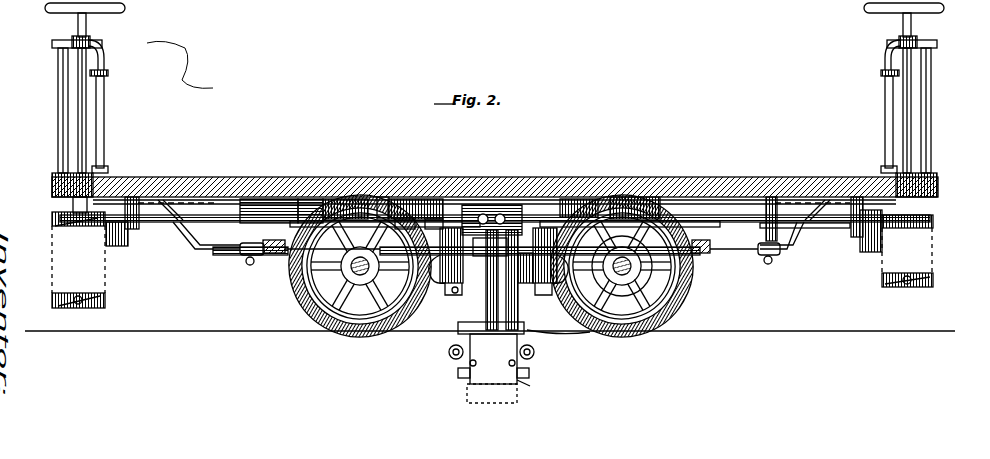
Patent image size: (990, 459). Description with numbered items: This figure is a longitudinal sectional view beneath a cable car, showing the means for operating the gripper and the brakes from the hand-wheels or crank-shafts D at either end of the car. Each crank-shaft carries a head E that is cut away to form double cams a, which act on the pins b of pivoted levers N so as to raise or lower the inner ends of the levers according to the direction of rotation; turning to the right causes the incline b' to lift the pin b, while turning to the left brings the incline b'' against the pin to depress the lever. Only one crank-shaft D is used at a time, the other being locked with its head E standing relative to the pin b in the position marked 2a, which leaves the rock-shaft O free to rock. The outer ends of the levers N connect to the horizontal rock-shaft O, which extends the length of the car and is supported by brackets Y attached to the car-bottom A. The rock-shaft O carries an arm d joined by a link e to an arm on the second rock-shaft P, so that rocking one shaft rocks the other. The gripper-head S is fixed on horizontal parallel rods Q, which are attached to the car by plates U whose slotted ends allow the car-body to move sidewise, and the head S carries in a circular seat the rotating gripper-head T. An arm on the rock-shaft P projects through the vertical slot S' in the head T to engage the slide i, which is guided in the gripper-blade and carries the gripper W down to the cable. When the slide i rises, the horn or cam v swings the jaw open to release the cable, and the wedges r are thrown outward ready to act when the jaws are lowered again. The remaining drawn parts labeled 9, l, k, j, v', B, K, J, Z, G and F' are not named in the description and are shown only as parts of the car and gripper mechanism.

The hand-wheels or crank-shafts D is at (96, 33).
The car-bottom A is at (648, 185).
The brackets Y is at (132, 196).
The horizontal parallel rods Q is at (240, 205).
The plates U is at (306, 207).
The arm d is at (402, 217).
The link e is at (432, 217).
The gripper-head S is at (492, 197).
The cross head 9 is at (493, 246).
The horn or cam v is at (481, 280).
The slide i is at (510, 280).
The rotating gripper-head T is at (533, 287).
The vertical slot S' is at (499, 261).
The track brake shoe box l is at (493, 353).
The roller k is at (534, 353).
The roller j is at (450, 338).
The connecting rod v' is at (563, 341).
The gripper W is at (508, 383).
The wedges r is at (530, 386).
The car wheel B is at (300, 305).
The rock-shaft P is at (614, 266).
The brake shoe K is at (272, 253).
The clevis J is at (245, 255).
The brake rod Z is at (185, 235).
The lever G is at (215, 232).
The chain and brace F' is at (494, 210).
The rock-shaft O is at (805, 223).
The head E is at (52, 220).
The pivoted levers N is at (110, 238).
The double cams a is at (80, 222).
The pins b is at (916, 294).
The incline b' is at (90, 295).
The incline b'' is at (66, 289).
The locked position of head 2a is at (907, 317).